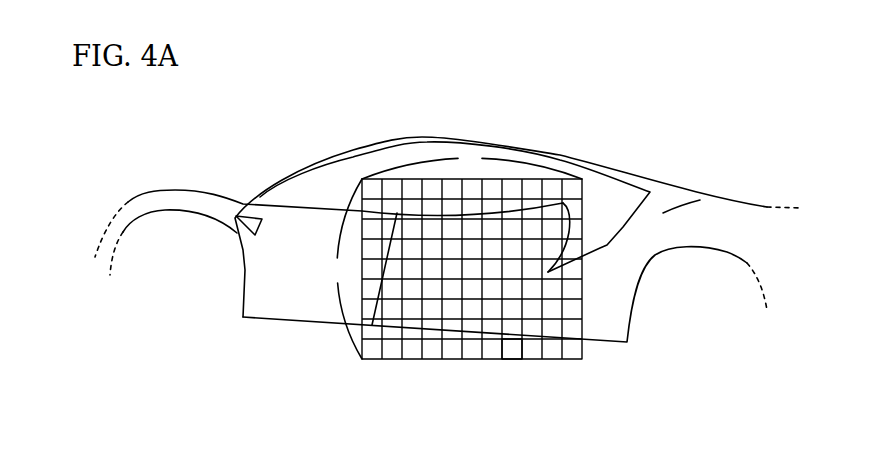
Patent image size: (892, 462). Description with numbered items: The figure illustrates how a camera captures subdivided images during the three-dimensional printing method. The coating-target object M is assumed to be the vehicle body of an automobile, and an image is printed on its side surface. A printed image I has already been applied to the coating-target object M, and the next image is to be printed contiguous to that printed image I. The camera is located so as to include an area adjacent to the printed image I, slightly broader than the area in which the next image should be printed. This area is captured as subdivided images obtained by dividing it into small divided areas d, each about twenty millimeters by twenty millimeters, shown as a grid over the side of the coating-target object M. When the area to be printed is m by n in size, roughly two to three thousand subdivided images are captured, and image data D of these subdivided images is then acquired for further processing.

The coating-target object M is at (653, 220).
The printed image I is at (303, 288).
The image data D is at (583, 359).
The divided area d is at (512, 350).
The area dimension m is at (346, 269).
The area dimension n is at (472, 160).